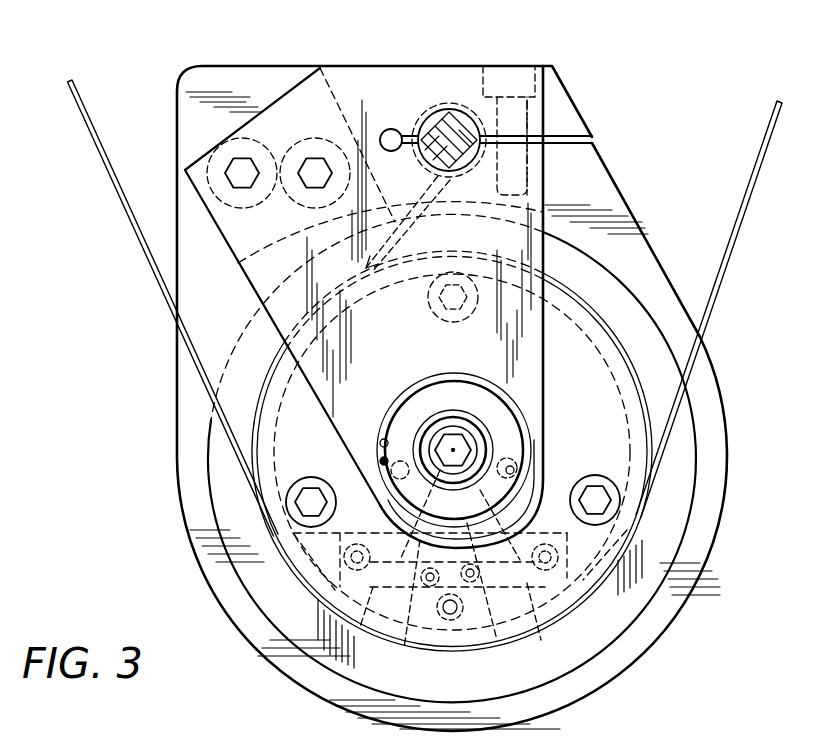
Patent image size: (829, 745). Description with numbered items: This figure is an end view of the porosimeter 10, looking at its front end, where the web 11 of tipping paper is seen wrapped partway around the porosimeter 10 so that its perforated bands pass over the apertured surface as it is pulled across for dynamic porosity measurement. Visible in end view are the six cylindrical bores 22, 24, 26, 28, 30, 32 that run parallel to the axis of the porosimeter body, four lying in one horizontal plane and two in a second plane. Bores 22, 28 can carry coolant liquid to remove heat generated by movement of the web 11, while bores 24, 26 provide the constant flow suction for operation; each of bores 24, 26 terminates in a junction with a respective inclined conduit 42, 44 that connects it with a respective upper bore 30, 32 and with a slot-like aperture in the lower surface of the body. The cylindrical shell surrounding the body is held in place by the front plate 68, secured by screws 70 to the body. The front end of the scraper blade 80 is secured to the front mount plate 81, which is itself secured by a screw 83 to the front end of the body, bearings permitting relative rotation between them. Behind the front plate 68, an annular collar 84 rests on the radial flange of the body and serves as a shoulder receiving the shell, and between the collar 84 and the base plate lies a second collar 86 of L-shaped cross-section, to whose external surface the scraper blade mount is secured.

The porosimeter 10 is at (744, 455).
The web 11 is at (735, 252).
The cylindrical bore 22 is at (538, 632).
The cylindrical bore 24 is at (492, 642).
The cylindrical bore 26 is at (405, 640).
The cylindrical bore 28 is at (380, 632).
The upper bore 30 is at (512, 418).
The upper bore 32 is at (390, 440).
The inclined conduit 42 is at (579, 542).
The inclined conduit 44 is at (430, 548).
The front plate 68 is at (643, 338).
The screws 70 is at (453, 285).
The scraper blade 80 is at (479, 187).
The front mount plate 81 is at (405, 78).
The screw 83 is at (449, 440).
The annular collar 84 is at (638, 593).
The second collar 86 is at (627, 650).